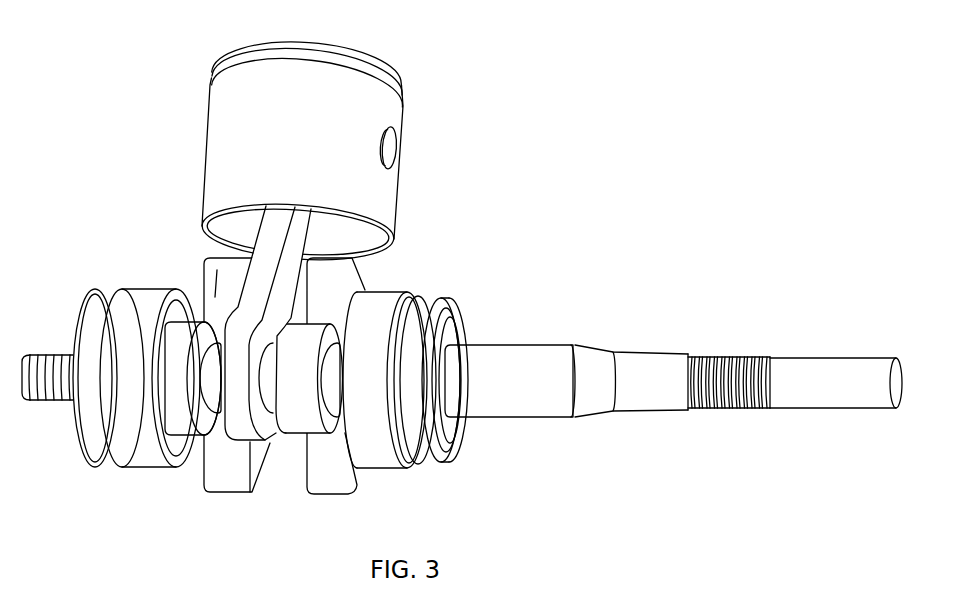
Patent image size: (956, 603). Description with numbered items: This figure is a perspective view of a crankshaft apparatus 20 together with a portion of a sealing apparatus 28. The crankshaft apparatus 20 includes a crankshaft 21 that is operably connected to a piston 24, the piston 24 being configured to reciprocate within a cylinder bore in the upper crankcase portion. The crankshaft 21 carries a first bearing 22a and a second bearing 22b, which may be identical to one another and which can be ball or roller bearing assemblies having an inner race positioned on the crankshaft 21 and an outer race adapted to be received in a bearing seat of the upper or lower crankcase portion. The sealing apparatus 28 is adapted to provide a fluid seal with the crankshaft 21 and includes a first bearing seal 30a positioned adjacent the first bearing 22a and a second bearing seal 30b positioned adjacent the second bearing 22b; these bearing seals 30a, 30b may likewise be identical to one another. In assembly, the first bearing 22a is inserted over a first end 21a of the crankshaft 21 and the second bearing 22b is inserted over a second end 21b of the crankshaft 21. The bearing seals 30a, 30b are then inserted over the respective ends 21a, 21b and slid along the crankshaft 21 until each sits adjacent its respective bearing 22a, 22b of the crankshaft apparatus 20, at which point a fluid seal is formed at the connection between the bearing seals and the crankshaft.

The crankshaft apparatus 20 is at (452, 350).
The crankshaft 21 is at (528, 418).
The first end of the crankshaft 21a is at (827, 410).
The second end of the crankshaft 21b is at (25, 400).
The first bearing 22a is at (398, 291).
The second bearing 22b is at (152, 288).
The piston 24 is at (211, 134).
The sealing apparatus 28 is at (476, 301).
The first bearing seal 30a is at (463, 282).
The second bearing seal 30b is at (94, 272).